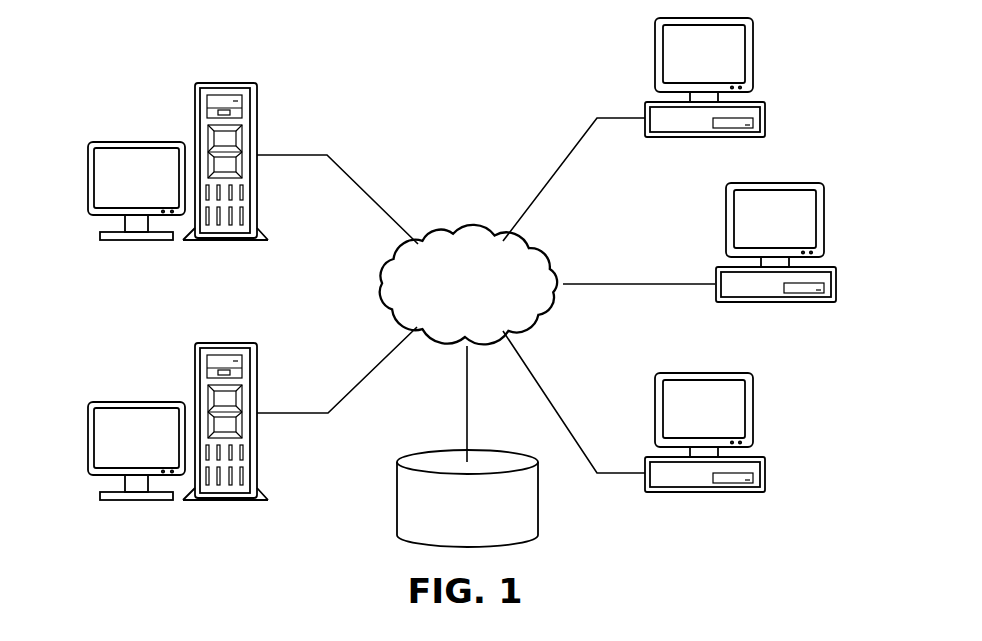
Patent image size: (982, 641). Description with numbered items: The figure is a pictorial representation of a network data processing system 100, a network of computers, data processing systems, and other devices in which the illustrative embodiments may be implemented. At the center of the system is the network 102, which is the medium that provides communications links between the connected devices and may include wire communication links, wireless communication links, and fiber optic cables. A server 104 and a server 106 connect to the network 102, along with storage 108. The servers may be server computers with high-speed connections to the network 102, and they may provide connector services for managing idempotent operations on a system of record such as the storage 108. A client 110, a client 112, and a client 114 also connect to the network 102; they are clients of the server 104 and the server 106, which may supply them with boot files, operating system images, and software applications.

The network data processing system 100 is at (327, 60).
The network 102 is at (443, 231).
The server 104 is at (88, 179).
The server 106 is at (88, 437).
The storage 108 is at (397, 498).
The client 110 is at (765, 110).
The client 112 is at (836, 296).
The client 114 is at (765, 484).